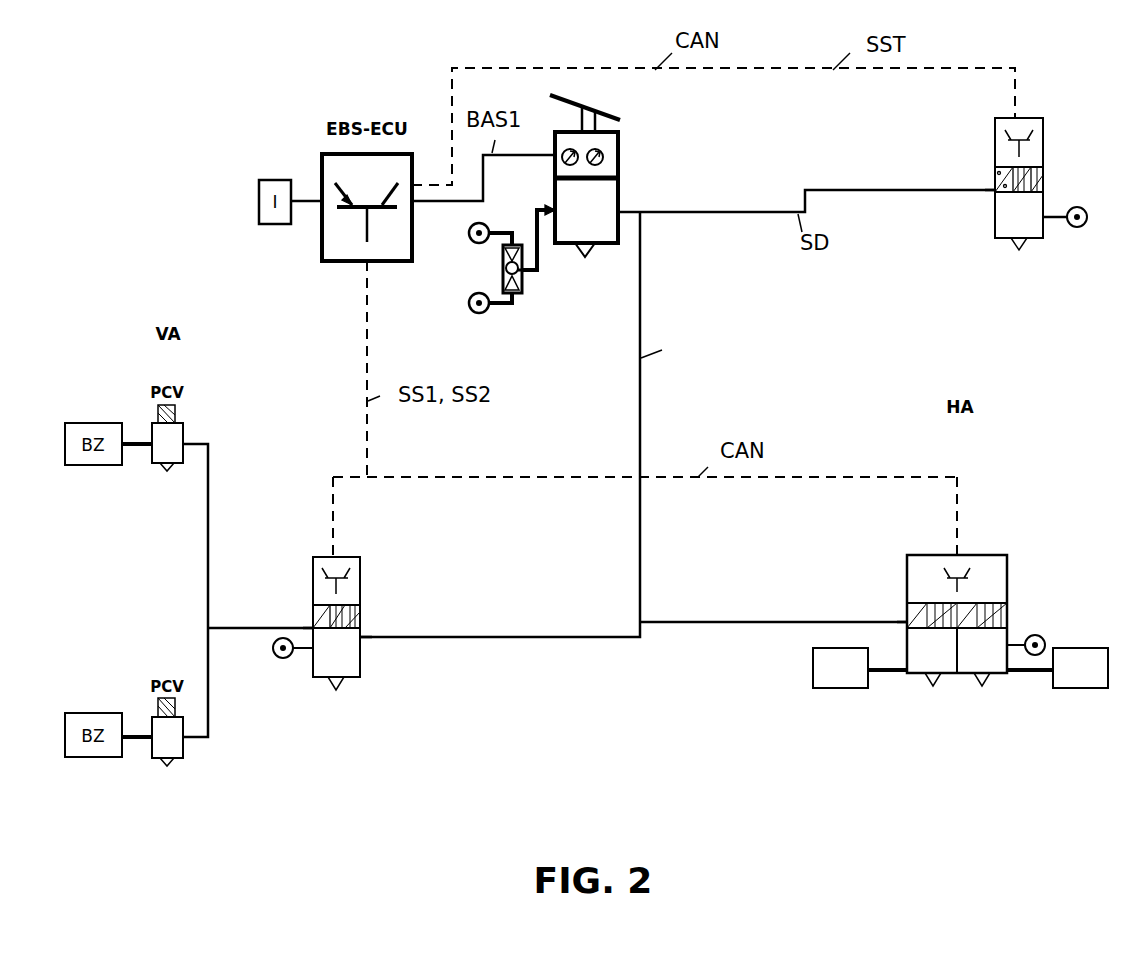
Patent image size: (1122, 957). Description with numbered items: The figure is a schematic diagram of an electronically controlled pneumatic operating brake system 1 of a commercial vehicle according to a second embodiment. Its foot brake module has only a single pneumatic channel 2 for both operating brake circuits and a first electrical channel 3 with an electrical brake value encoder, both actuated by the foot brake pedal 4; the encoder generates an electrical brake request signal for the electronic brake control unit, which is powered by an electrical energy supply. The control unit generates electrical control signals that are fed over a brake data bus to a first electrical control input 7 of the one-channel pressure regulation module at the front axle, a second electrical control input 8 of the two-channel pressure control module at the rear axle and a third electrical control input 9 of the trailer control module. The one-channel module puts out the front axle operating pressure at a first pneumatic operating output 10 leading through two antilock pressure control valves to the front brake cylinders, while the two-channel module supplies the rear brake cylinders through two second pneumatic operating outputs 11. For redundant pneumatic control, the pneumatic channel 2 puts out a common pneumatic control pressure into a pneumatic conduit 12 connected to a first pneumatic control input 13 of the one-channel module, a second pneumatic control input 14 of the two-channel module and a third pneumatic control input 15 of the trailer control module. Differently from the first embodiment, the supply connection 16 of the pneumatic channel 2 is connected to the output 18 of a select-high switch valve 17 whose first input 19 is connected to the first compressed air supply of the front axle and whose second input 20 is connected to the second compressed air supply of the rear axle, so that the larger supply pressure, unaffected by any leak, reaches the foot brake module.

The operating brake system 1 is at (207, 100).
The pneumatic channel 2 is at (572, 232).
The first electrical channel 3 is at (620, 161).
The foot brake pedal 4 is at (566, 104).
The first electrical control input 7 is at (334, 557).
The second electrical control input 8 is at (958, 555).
The third electrical control input 9 is at (1020, 117).
The first pneumatic operating output 10 is at (313, 627).
The second pneumatic operating outputs 11 is at (907, 673).
The pneumatic conduit 12 is at (641, 412).
The first pneumatic control input 13 is at (363, 637).
The second pneumatic control input 14 is at (907, 618).
The third pneumatic control input 15 is at (992, 193).
The supply connection 16 is at (546, 207).
The switch valve 17 is at (505, 268).
The output 18 is at (518, 272).
The first input 19 is at (516, 243).
The second input 20 is at (515, 297).